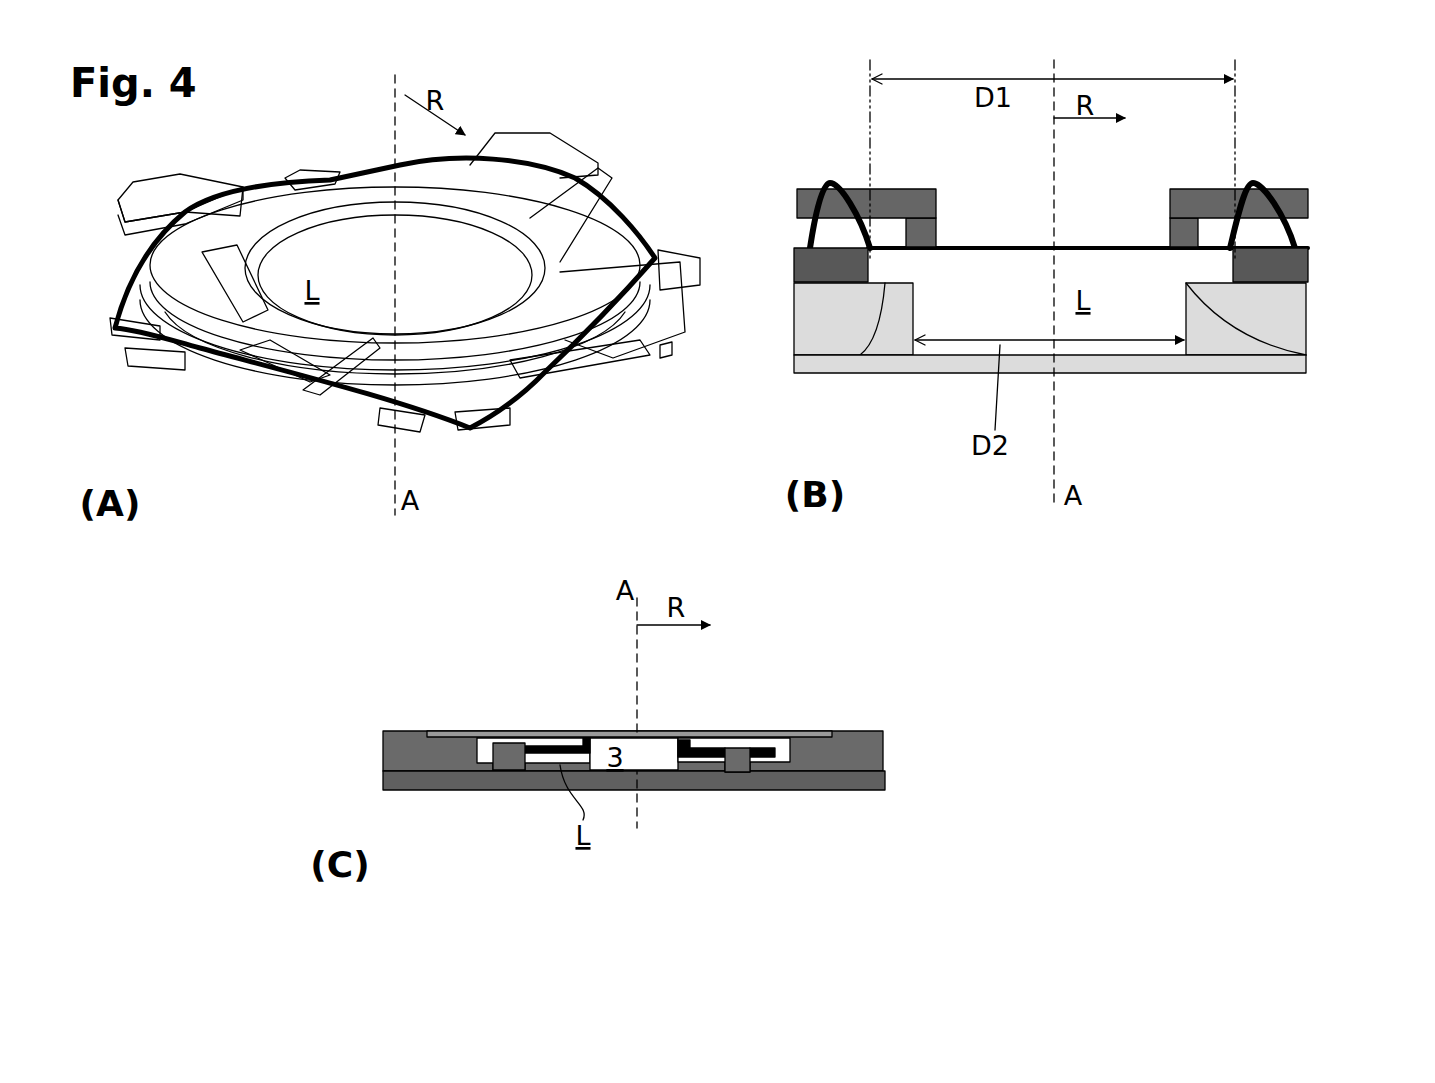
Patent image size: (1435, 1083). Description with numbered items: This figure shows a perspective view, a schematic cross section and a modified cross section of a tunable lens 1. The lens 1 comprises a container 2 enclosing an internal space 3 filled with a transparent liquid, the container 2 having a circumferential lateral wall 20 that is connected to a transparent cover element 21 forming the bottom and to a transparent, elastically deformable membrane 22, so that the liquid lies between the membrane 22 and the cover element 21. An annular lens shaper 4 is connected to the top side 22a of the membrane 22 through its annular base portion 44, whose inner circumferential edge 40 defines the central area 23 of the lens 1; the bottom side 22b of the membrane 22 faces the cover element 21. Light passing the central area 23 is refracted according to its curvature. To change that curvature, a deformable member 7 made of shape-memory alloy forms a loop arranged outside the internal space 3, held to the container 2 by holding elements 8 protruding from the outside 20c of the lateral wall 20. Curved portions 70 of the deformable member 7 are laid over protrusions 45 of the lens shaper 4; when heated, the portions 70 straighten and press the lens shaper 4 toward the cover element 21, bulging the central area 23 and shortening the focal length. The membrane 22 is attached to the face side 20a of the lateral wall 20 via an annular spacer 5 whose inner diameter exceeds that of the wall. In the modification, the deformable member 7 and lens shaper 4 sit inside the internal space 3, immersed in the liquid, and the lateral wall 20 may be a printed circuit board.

The lens 1 is at (315, 150).
The container 2 is at (605, 238).
The internal space 3 is at (561, 470).
The lens shaper 4 is at (378, 348).
The annular spacer 5 is at (792, 265).
The deformable member 7 is at (300, 372).
The holding elements 8 is at (290, 176).
The circumferential lateral wall 20 is at (390, 420).
The face side 20a is at (865, 345).
The outside 20c is at (195, 370).
The cover element 21 is at (1163, 385).
The membrane 22 is at (576, 255).
The top side 22a is at (1138, 245).
The bottom side 22b is at (1130, 250).
The central area 23 is at (370, 300).
The inner circumferential edge 40 is at (440, 232).
The annular base portion 44 is at (465, 335).
The protrusions 45 is at (145, 212).
The portions 70 is at (230, 200).